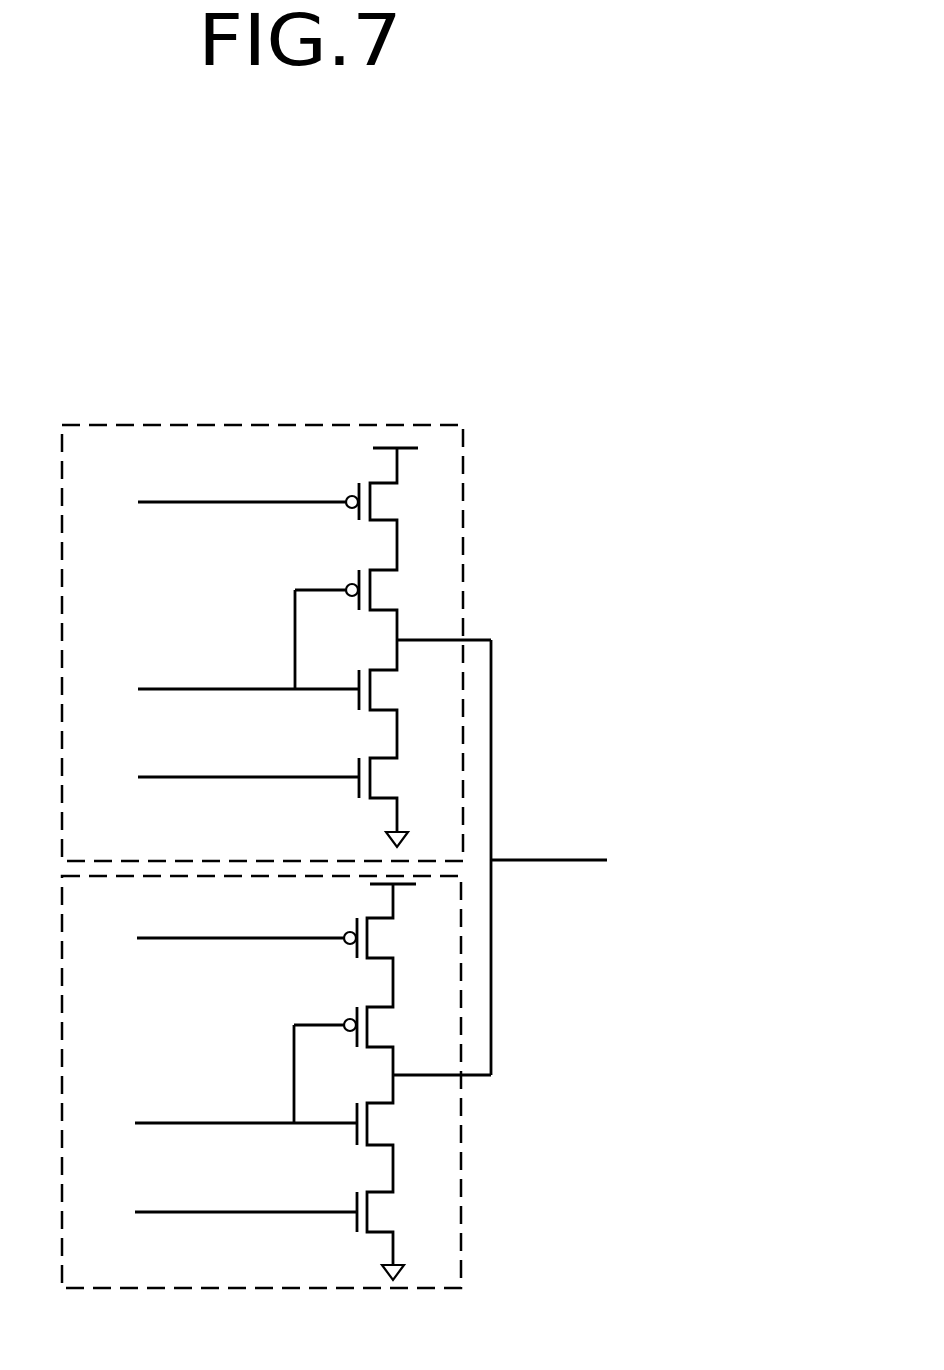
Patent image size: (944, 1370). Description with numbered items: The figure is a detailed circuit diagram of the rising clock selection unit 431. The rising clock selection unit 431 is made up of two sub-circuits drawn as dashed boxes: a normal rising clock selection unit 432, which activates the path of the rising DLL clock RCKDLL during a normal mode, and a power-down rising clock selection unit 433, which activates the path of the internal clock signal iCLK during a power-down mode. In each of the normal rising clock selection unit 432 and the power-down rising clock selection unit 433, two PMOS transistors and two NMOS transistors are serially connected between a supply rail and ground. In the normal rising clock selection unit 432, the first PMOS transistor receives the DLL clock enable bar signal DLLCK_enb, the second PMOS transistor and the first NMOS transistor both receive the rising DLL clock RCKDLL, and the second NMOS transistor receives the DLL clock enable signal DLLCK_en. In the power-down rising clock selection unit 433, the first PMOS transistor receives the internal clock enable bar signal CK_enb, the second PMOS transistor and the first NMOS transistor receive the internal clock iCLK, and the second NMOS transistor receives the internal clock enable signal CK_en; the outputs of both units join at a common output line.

The rising clock selection unit 431 is at (695, 297).
The normal rising clock selection unit 432 is at (465, 538).
The power-down rising clock selection unit 433 is at (460, 1170).